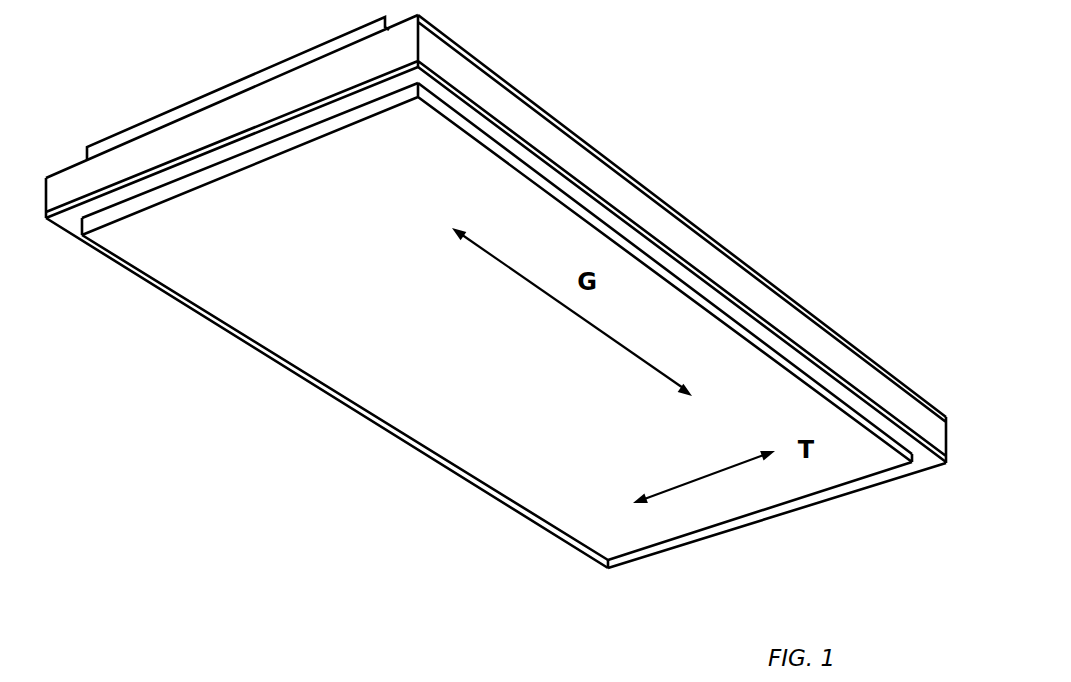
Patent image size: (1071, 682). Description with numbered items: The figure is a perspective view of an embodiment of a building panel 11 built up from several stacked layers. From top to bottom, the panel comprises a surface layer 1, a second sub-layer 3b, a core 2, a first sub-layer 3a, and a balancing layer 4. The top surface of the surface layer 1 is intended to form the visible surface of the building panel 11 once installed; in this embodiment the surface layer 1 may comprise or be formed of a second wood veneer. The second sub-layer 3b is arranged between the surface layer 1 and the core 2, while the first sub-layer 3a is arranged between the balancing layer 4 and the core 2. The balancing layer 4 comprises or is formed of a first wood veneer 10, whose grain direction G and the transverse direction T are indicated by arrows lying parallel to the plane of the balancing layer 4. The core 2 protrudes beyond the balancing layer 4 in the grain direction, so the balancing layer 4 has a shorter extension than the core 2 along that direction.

The surface layer 1 is at (240, 85).
The core 2 is at (767, 303).
The first sub-layer 3a is at (925, 458).
The second sub-layer 3b is at (588, 142).
The balancing layer 4 is at (365, 355).
The first wood veneer 10 is at (512, 433).
The building panel 11 is at (720, 178).